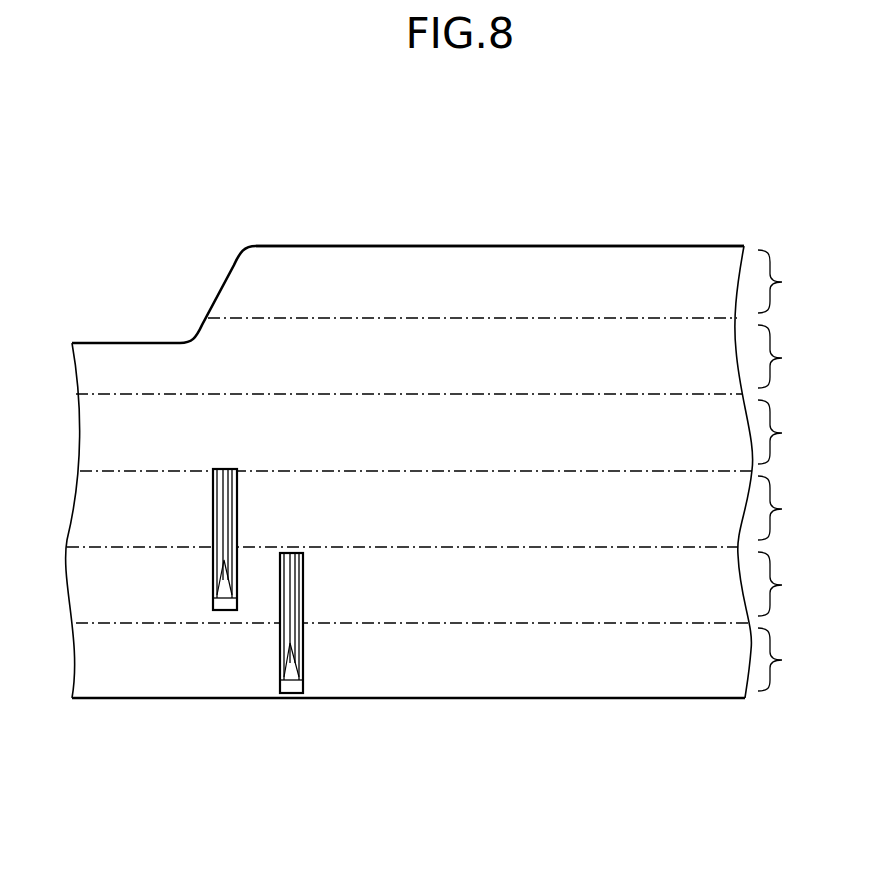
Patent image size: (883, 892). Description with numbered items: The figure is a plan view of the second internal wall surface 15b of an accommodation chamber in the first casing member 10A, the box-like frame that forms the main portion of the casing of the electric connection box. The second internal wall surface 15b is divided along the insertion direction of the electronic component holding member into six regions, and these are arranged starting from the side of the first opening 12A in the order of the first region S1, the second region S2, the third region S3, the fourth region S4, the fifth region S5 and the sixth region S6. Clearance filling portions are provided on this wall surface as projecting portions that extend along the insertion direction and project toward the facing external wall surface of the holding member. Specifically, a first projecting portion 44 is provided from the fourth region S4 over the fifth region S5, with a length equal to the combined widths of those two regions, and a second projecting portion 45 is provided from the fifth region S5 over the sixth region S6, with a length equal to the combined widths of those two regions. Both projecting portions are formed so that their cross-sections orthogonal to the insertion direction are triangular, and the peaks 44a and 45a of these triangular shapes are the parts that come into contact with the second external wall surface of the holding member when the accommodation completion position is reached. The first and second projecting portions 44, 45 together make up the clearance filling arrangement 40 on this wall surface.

The first casing member 10A is at (658, 190).
The first opening 12A is at (445, 253).
The second internal wall surface 15b is at (592, 675).
The head assembly 40 is at (235, 672).
The first projecting portion 44 is at (170, 648).
The peak 44a is at (223, 517).
The second projecting portion 45 is at (301, 700).
The peak 45a is at (292, 608).
The first region S1 is at (803, 281).
The second region S2 is at (803, 356).
The third region S3 is at (803, 432).
The fourth region S4 is at (803, 508).
The fifth region S5 is at (803, 584).
The sixth region S6 is at (803, 659).